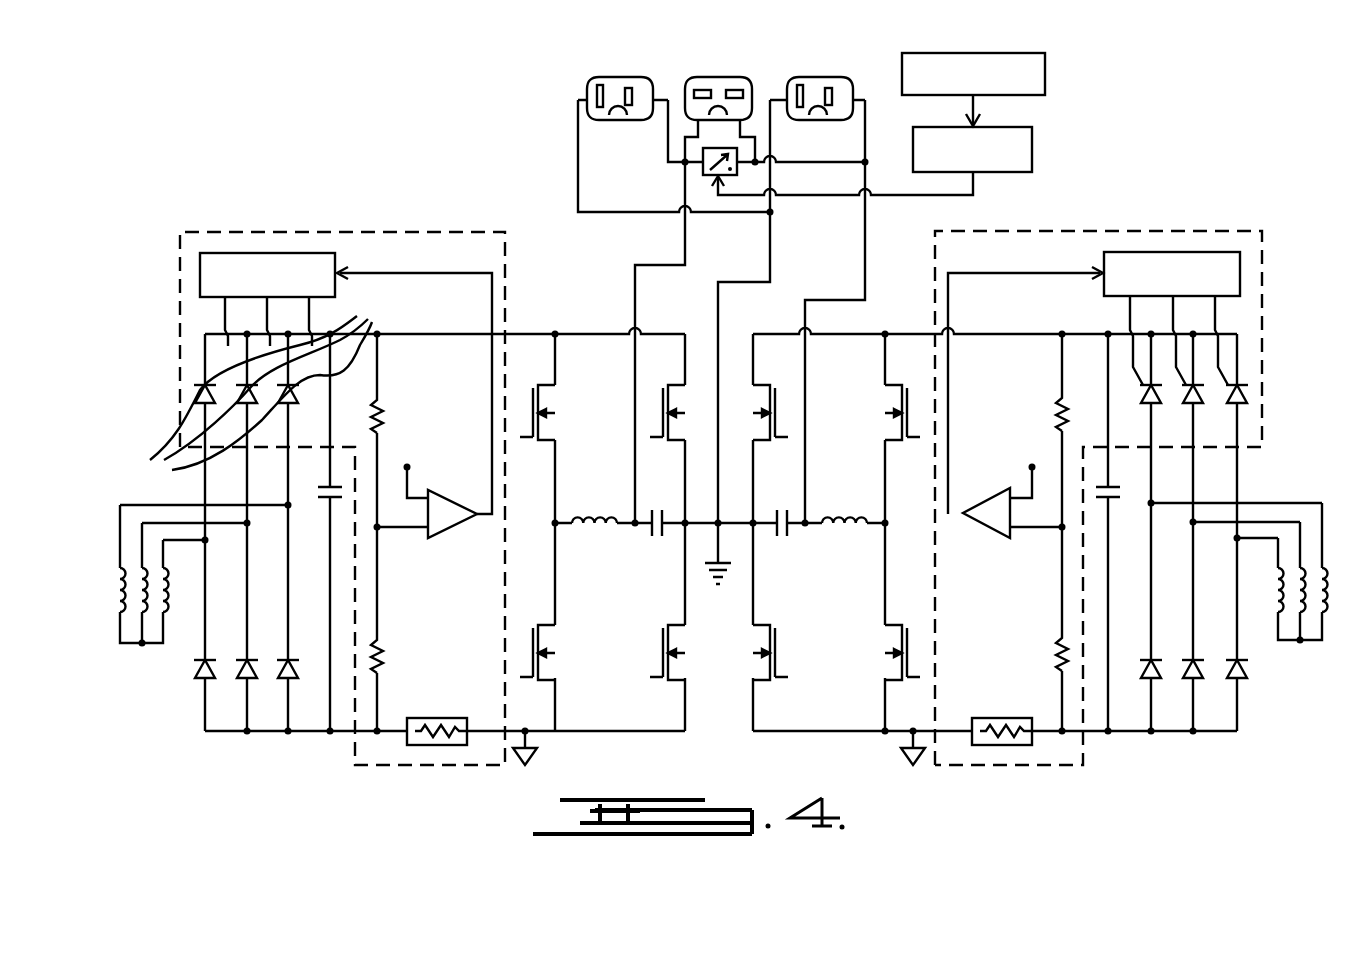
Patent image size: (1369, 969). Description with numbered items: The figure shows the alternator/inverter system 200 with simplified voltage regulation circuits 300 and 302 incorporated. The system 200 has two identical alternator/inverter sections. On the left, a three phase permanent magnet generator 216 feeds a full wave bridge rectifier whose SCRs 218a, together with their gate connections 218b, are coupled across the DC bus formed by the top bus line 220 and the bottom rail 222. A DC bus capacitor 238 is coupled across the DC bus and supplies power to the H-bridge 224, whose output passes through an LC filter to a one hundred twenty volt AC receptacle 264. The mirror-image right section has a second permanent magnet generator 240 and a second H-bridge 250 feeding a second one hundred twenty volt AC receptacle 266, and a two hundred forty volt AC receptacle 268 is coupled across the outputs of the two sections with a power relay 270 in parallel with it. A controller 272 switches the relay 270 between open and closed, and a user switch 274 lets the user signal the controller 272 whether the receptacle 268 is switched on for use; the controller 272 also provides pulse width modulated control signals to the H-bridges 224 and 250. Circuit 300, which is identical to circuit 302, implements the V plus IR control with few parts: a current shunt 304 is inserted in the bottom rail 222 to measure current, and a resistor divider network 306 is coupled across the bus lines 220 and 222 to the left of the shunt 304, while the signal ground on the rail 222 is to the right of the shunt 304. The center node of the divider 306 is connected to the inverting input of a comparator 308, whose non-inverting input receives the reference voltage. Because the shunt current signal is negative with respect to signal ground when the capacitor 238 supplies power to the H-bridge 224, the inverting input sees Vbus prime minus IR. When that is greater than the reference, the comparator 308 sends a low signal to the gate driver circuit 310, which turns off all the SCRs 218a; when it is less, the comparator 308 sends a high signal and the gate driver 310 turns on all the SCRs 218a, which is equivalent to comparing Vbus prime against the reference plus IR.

The alternator/inverter system 200 is at (312, 143).
The three phase permanent magnet generator 216 is at (103, 617).
The SCRs 218a is at (247, 402).
The gate driver outputs 218b is at (315, 320).
The DC bus line 220 is at (533, 334).
The bottom rail of the DC bus 222 is at (608, 731).
The H-bridge 224 is at (683, 331).
The DC bus capacitor 238 is at (321, 500).
The permanent magnet generator PMG2 240 is at (1333, 616).
The second H-bridge 250 is at (757, 331).
The 120 volt AC receptacle 264 is at (590, 83).
The second 120 volt AC receptacle 266 is at (802, 82).
The 240 volt AC receptacle 268 is at (692, 82).
The power relay 270 is at (703, 172).
The controller 272 is at (1024, 152).
The user switch 274 is at (1045, 82).
The voltage regulation circuit 300 is at (366, 230).
The second voltage regulation circuit 302 is at (1200, 228).
The current shunt 304 is at (432, 720).
The resistor divider network 306 is at (392, 651).
The comparator 308 is at (440, 494).
The gate driver circuit 310 is at (231, 253).